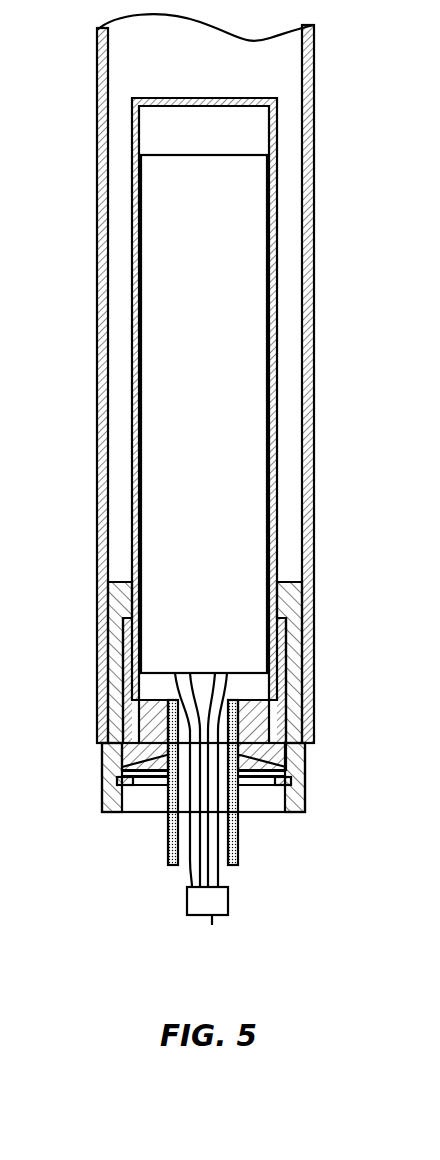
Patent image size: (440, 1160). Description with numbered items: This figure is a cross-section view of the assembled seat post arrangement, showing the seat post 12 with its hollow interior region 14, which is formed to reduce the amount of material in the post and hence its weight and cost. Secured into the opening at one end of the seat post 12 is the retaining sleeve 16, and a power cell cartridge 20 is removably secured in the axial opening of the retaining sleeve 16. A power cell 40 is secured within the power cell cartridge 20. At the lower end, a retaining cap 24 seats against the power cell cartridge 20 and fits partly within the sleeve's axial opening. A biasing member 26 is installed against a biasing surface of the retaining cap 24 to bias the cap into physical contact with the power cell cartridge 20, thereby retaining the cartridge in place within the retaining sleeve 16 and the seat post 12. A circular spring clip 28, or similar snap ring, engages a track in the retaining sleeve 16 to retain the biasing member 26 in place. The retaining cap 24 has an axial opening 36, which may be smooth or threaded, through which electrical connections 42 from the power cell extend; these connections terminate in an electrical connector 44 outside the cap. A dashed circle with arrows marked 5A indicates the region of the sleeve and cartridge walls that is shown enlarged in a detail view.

The seat post 12 is at (308, 137).
The hollow interior region 14 is at (262, 66).
The retaining sleeve 16 is at (102, 798).
The power cell cartridge 20 is at (273, 290).
The retaining cap 24 is at (238, 853).
The biasing member 26 is at (128, 755).
The circular spring clip 28 is at (117, 779).
The axial opening 36 is at (227, 795).
The power cell 40 is at (242, 362).
The electrical connections 42 is at (228, 878).
The electrical connector 44 is at (212, 915).
The detail view 5A is at (357, 560).